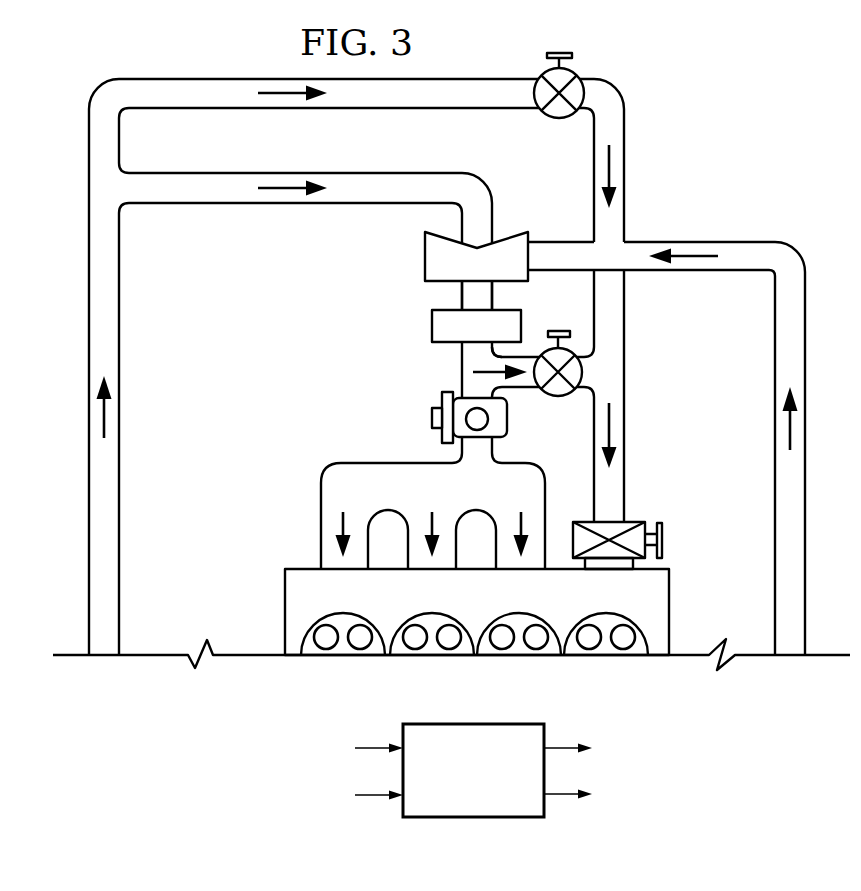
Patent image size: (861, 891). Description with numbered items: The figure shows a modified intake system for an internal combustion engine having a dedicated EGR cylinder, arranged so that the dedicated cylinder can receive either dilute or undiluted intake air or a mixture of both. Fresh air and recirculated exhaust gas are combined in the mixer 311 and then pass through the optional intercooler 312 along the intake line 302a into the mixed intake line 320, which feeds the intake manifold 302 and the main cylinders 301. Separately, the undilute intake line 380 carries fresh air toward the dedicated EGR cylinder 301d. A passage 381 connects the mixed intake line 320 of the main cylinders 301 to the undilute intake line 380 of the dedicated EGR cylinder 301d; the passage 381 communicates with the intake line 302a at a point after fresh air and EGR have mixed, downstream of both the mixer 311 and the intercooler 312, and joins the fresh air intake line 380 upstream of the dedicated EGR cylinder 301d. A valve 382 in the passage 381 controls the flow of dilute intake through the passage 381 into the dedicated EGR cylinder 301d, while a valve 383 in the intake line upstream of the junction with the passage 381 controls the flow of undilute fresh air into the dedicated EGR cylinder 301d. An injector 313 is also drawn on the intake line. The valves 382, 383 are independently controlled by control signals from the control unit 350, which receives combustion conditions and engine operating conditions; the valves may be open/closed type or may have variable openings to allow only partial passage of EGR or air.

The main cylinders 301 is at (562, 597).
The dedicated EGR cylinder 301d is at (615, 620).
The intake manifold 302 is at (321, 496).
The intake line 302a is at (227, 204).
The mixer 311 is at (424, 255).
The intercooler 312 is at (431, 325).
The fuel injector 313 is at (431, 418).
The mixed intake line 320 is at (461, 293).
The control unit 350 is at (472, 818).
The undilute intake line 380 is at (626, 125).
The passage 381 is at (528, 356).
The valve 382 is at (558, 397).
The valve 383 is at (558, 119).